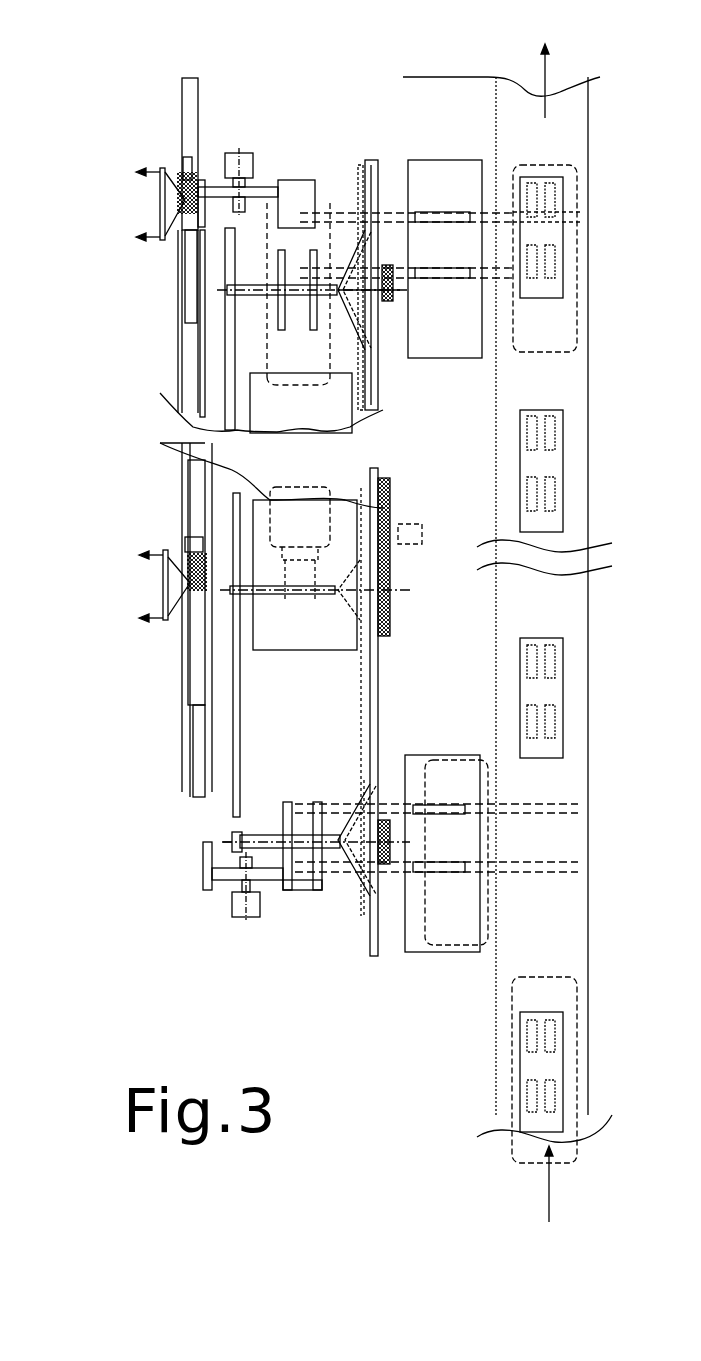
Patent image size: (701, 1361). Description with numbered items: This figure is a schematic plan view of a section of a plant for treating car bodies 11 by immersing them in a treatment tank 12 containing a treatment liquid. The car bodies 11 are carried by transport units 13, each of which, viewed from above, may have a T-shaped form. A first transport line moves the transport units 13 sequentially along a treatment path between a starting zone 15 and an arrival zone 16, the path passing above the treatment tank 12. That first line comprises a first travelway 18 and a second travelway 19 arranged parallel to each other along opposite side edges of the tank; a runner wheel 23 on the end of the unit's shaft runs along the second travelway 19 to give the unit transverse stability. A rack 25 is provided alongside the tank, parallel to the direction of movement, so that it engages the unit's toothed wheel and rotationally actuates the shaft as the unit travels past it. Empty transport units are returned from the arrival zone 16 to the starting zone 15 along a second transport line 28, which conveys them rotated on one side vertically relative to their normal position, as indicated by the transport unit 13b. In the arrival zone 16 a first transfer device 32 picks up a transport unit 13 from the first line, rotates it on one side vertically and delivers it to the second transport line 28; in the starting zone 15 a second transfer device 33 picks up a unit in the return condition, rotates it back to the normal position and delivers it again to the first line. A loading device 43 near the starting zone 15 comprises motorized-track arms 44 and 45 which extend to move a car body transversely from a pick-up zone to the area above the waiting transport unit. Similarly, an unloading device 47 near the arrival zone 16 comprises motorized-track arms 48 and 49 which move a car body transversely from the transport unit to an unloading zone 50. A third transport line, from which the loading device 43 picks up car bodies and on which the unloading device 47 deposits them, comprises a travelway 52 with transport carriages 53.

The car body 11 is at (325, 200).
The treatment tank 12 is at (268, 633).
The transport unit 13 is at (268, 822).
The transport unit in return condition 13b is at (180, 182).
The starting zone 15 is at (290, 930).
The arrival zone 16 is at (350, 102).
The first travelway 18 is at (380, 716).
The second travelway 19 is at (240, 735).
The runner wheel 23 is at (233, 840).
The rack 25 is at (390, 490).
The second transport line 28 is at (162, 470).
The first transfer device 32 is at (227, 142).
The second transfer device 33 is at (214, 890).
The loading device 43 is at (420, 955).
The motorized-track arm 44 is at (590, 806).
The motorized-track arm 45 is at (590, 870).
The unloading device 47 is at (447, 152).
The motorized-track arm 48 is at (393, 213).
The motorized-track arm 49 is at (398, 285).
The unloading zone 50 is at (590, 255).
The travelway 52 is at (590, 730).
The transport carriage 53 is at (555, 290).